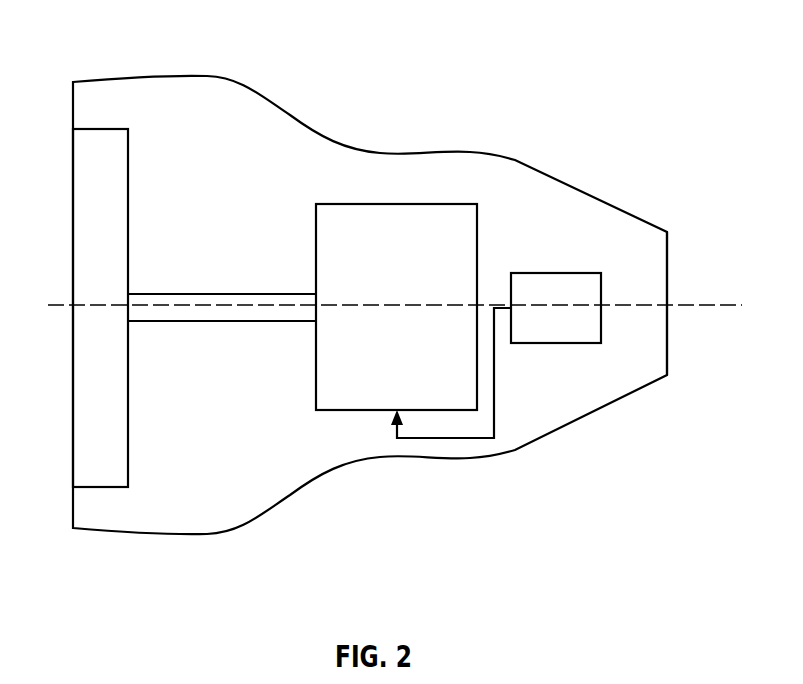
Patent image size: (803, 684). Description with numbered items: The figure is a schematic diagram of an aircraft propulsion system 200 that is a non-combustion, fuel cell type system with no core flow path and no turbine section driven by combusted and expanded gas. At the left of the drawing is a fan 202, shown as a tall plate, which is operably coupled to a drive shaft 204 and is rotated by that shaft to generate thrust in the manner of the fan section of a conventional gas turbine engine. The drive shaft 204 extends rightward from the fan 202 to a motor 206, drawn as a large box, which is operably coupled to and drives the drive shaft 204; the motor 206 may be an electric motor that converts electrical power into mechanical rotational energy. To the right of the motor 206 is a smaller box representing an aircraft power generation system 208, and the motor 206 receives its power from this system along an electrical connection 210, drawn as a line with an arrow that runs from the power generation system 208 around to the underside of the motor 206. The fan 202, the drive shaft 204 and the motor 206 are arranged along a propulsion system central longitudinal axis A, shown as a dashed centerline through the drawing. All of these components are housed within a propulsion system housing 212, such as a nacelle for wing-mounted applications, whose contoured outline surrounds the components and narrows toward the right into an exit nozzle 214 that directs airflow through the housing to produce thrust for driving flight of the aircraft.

The aircraft propulsion system 200 is at (700, 69).
The fan 202 is at (102, 128).
The drive shaft 204 is at (223, 293).
The motor 206 is at (455, 204).
The aircraft power generation system 208 is at (588, 273).
The electrical connection 210 is at (494, 372).
The propulsion system housing 212 is at (207, 77).
The exit nozzle 214 is at (667, 357).
The propulsion system central longitudinal axis A is at (695, 303).